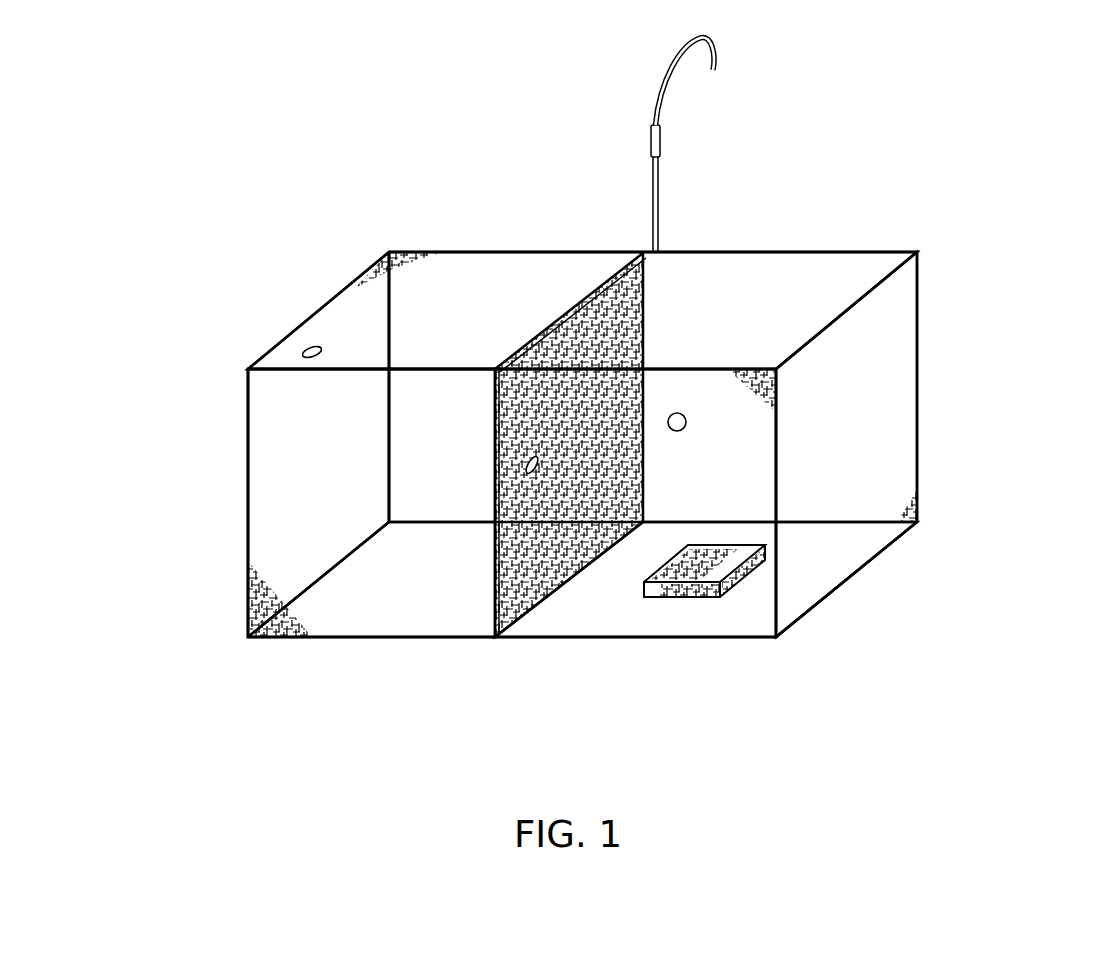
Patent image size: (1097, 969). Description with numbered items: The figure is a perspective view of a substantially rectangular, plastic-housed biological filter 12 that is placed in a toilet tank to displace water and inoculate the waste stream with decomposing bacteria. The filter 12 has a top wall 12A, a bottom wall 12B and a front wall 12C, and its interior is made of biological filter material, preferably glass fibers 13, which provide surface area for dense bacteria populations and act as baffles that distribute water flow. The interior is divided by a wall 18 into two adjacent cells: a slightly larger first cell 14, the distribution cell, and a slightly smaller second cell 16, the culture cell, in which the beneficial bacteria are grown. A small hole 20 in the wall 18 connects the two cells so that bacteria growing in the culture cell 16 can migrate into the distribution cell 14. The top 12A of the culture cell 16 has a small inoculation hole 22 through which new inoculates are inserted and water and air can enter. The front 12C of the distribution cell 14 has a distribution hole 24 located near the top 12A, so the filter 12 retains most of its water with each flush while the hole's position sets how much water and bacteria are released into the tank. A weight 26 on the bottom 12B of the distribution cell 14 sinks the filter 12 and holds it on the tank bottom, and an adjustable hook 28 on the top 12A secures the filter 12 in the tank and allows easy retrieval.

The biological filter 12 is at (465, 210).
The top wall 12A is at (810, 272).
The bottom wall 12B is at (733, 471).
The front wall 12C is at (800, 603).
The glass fibers 13 is at (388, 252).
The first cell 14 is at (660, 500).
The second cell 16 is at (376, 497).
The wall 18 is at (618, 293).
The hole 20 is at (535, 473).
The inoculation hole 22 is at (305, 348).
The distribution hole 24 is at (686, 425).
The weight 26 is at (765, 557).
The adjustable hook 28 is at (652, 128).